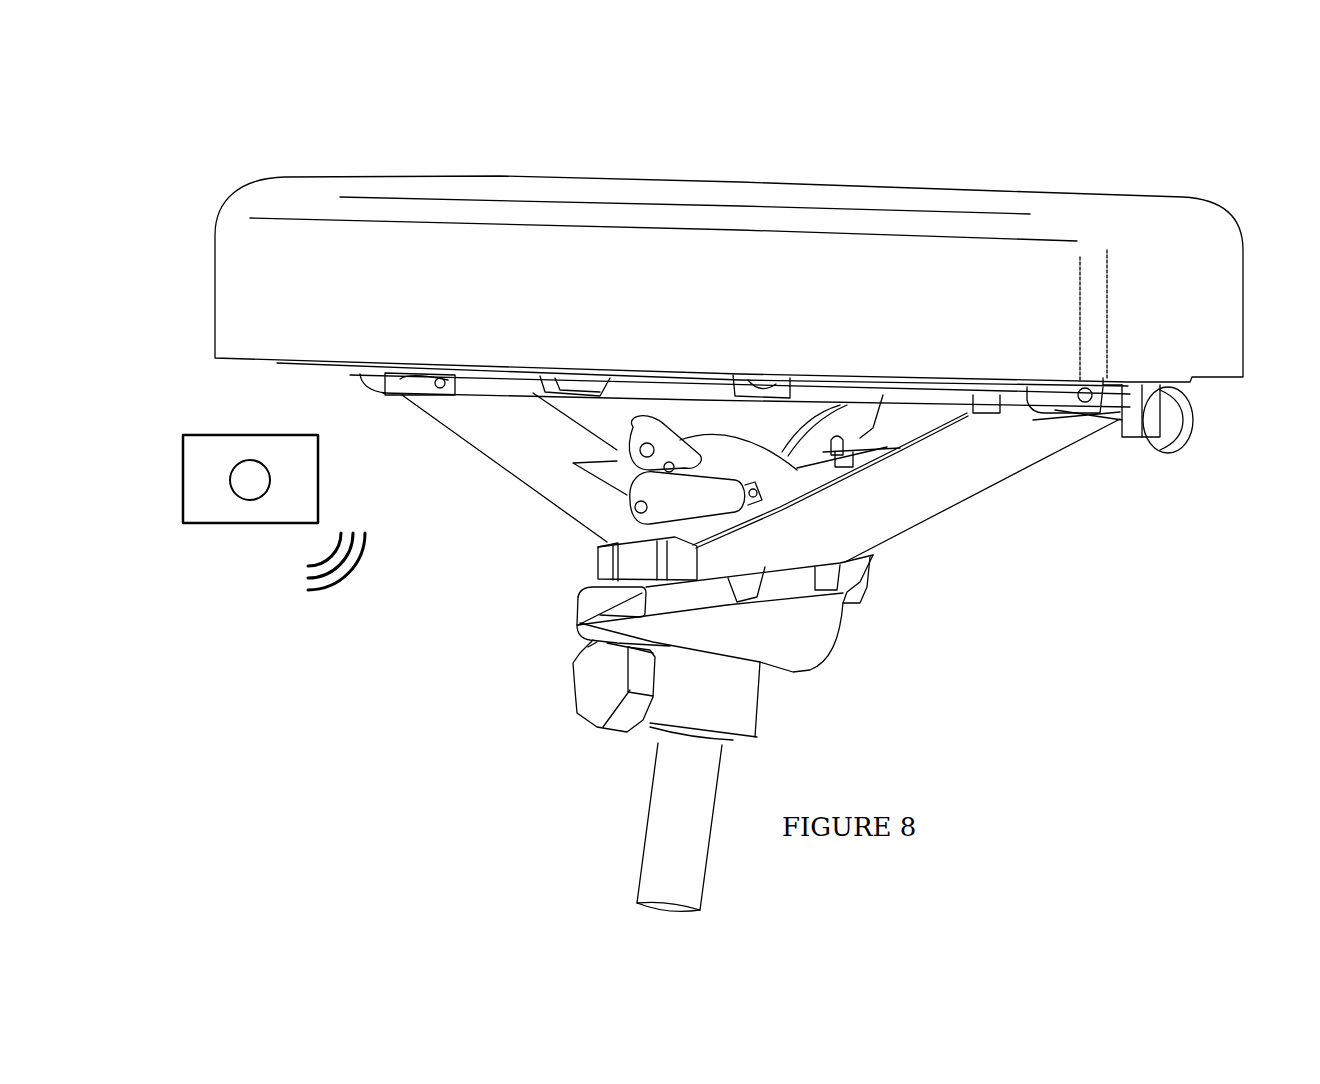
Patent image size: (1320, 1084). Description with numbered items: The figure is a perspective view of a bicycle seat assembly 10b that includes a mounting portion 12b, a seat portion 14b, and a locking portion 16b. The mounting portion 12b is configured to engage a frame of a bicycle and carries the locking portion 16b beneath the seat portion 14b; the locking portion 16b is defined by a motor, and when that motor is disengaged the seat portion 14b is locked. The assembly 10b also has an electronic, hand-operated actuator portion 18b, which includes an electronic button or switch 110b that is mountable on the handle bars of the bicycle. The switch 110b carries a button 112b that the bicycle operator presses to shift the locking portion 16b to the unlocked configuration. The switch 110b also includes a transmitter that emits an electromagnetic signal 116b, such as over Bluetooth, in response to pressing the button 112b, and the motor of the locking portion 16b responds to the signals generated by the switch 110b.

The bicycle seat assembly 10b is at (1103, 167).
The seat portion 14b is at (238, 163).
The locking portion 16b is at (460, 605).
The mounting portion 12b is at (398, 765).
The actuator portion 18b is at (1040, 772).
The electronic switch 110b is at (207, 420).
The button 112b is at (248, 485).
The signal 116b is at (313, 598).